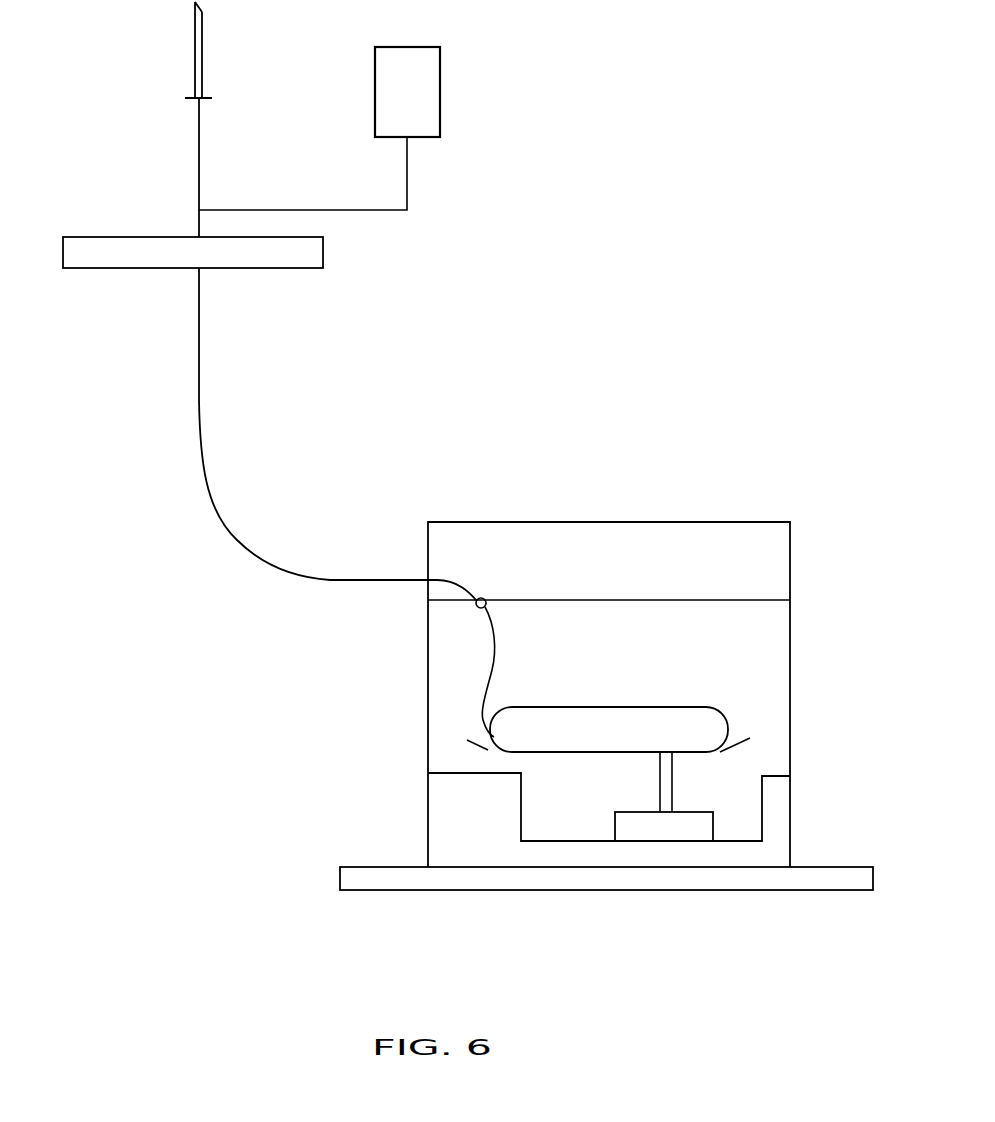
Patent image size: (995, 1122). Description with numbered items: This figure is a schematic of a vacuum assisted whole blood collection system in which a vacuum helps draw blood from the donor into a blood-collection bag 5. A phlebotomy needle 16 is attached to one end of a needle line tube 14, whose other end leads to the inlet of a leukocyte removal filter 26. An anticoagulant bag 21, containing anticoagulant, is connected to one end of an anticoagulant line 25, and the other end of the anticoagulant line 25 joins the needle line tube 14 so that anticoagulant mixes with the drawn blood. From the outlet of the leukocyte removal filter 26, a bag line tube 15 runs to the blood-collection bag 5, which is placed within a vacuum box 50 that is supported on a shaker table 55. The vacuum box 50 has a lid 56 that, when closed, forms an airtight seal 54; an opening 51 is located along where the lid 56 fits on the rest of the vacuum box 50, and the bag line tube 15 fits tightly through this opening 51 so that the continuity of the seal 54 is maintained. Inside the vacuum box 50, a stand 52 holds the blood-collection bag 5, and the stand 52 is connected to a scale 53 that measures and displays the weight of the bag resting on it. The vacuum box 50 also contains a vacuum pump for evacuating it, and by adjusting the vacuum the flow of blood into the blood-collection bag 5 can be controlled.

The phlebotomy needle 16 is at (202, 58).
The needle line tube 14 is at (199, 176).
The anticoagulant bag 21 is at (440, 91).
The anticoagulant line 25 is at (407, 180).
The leukocyte removal filter 26 is at (323, 250).
The bag line tube 15 is at (199, 420).
The opening 51 is at (478, 598).
The vacuum box 50 is at (637, 522).
The lid 56 is at (760, 562).
The airtight seal 54 is at (713, 599).
The blood-collection bag 5 is at (507, 738).
The stand 52 is at (500, 750).
The scale 53 is at (662, 830).
The shaker table 55 is at (572, 878).